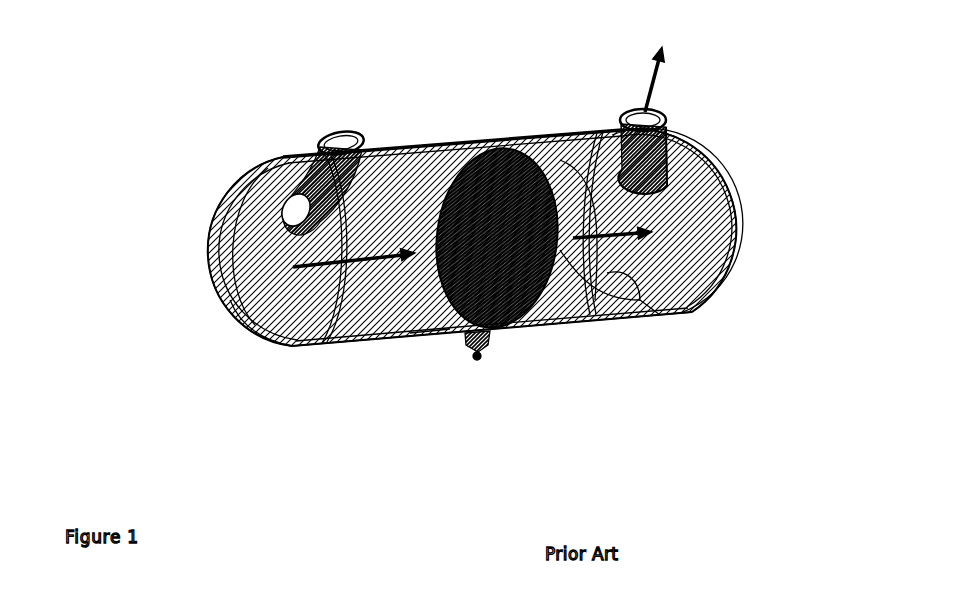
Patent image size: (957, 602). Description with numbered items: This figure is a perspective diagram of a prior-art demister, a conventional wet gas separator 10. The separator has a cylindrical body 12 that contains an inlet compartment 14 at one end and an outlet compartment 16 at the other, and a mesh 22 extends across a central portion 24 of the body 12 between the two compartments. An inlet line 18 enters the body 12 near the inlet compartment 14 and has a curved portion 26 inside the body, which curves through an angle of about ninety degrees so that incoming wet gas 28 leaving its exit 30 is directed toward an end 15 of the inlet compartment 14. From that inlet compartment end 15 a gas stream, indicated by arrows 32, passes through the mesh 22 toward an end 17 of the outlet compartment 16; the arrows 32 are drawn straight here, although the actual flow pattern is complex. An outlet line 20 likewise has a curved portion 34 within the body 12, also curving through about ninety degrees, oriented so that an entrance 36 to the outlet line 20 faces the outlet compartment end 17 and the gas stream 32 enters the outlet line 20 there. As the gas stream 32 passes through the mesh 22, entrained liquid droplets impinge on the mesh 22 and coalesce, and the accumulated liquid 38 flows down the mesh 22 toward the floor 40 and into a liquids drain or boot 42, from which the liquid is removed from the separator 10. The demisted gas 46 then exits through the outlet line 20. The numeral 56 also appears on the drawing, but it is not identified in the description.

The wet gas separator 10 is at (170, 144).
The cylindrical body 12 is at (433, 147).
The inlet compartment 14 is at (352, 363).
The end of inlet compartment 15 is at (193, 262).
The outlet compartment 16 is at (631, 336).
The end of outlet compartment 17 is at (738, 222).
The inlet line 18 is at (233, 171).
The outlet line 20 is at (704, 150).
The mesh 22 is at (570, 323).
The central portion 24 is at (462, 116).
The curved portion 26 is at (275, 252).
The incoming wet gas 28 is at (336, 123).
The exit 30 is at (290, 220).
The gas stream 32 is at (397, 342).
The curved portion 34 is at (667, 173).
The entrance 36 is at (672, 182).
The liquid 38 is at (428, 333).
The floor 40 is at (660, 315).
The liquids drain 42 is at (500, 361).
The demisted gas 46 is at (652, 73).
The inner wall 56 is at (253, 343).